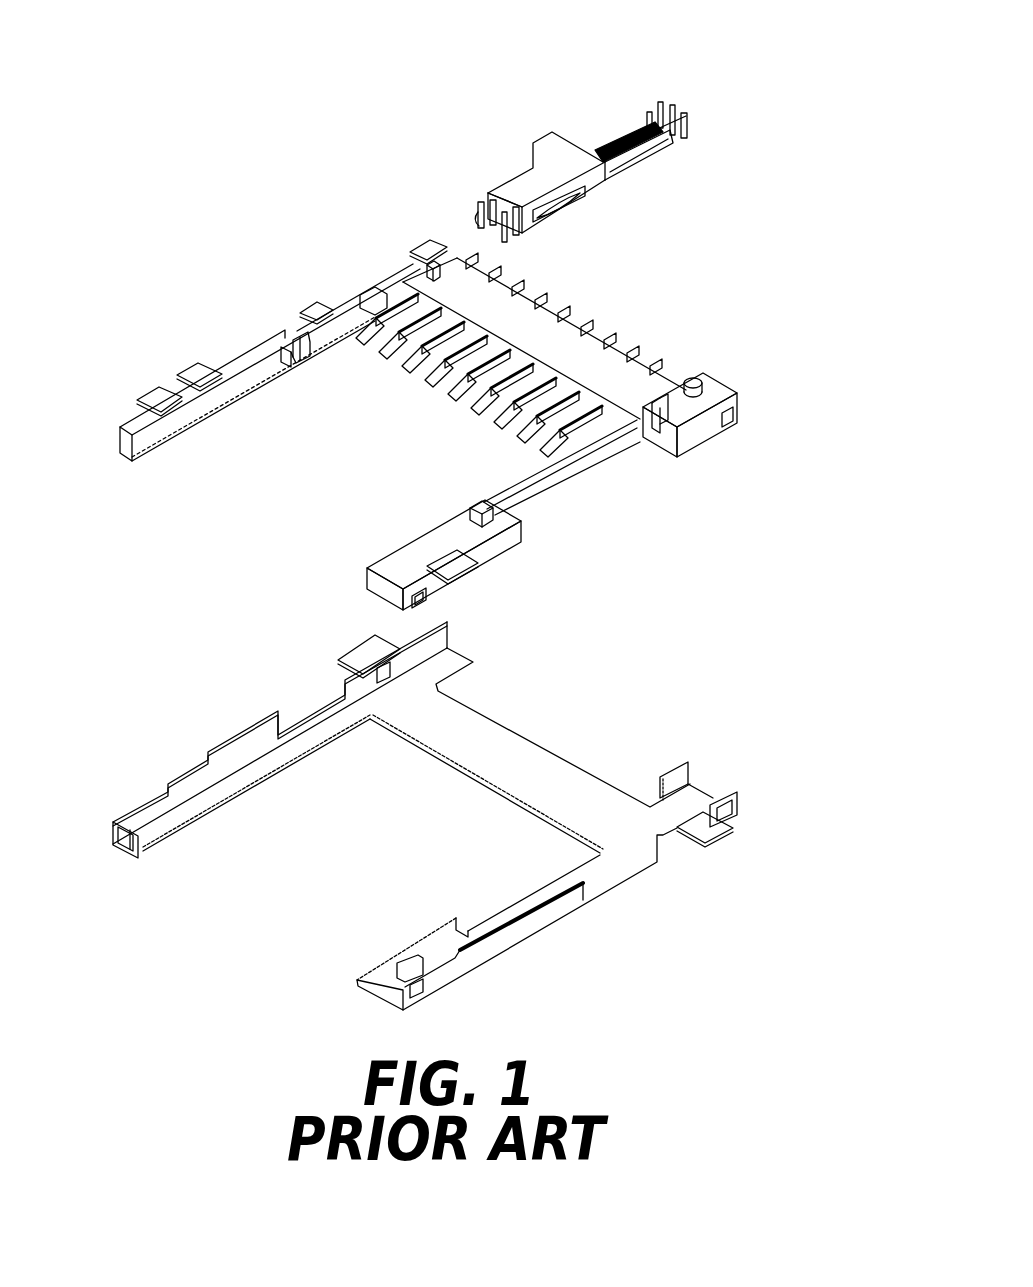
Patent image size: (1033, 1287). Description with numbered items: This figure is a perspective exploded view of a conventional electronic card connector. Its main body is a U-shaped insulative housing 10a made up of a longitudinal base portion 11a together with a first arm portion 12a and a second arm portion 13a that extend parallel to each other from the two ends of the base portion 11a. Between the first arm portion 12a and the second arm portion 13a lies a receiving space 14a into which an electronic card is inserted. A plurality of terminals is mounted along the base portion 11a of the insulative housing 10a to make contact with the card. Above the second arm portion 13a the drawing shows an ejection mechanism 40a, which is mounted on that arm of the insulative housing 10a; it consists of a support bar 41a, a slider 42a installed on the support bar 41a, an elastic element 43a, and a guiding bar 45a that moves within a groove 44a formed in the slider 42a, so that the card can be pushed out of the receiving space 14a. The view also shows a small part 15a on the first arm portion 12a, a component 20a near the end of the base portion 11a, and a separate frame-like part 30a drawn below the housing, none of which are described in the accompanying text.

The insulative housing 10a is at (608, 317).
The base portion 11a is at (534, 326).
The first arm portion 12a is at (145, 420).
The second arm portion 13a is at (397, 567).
The receiving space 14a is at (310, 503).
The latch clip 15a is at (292, 338).
The ground terminals 20a is at (640, 356).
The metal shell frame 30a is at (547, 738).
The ejection mechanism 40a is at (528, 129).
The support bar 41a is at (480, 221).
The slider 42a is at (560, 143).
The elastic element 43a is at (634, 126).
The groove 44a is at (580, 200).
The guiding bar 45a is at (645, 162).